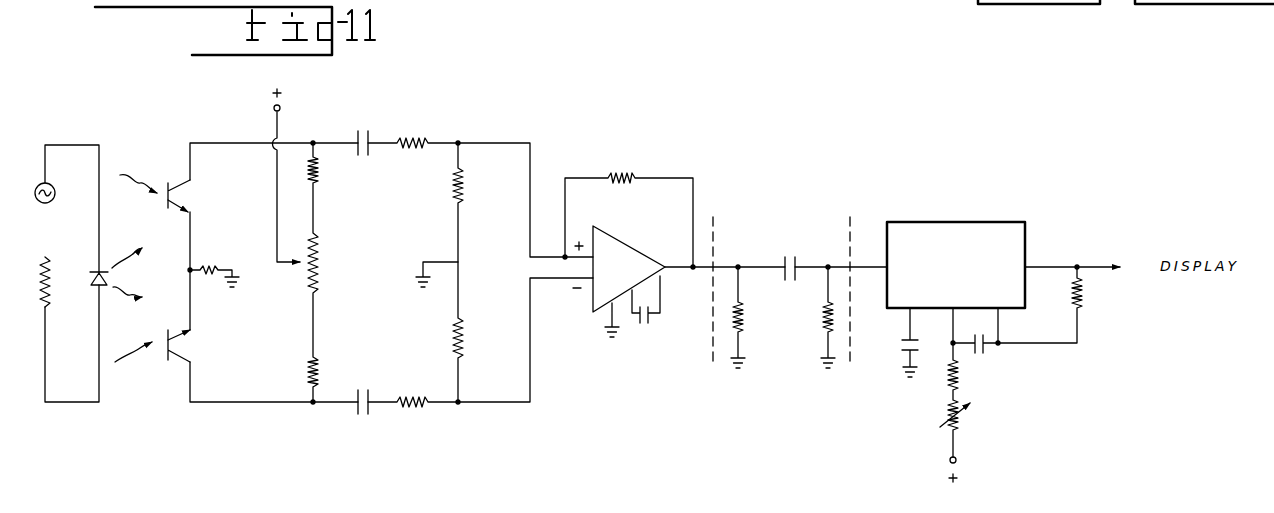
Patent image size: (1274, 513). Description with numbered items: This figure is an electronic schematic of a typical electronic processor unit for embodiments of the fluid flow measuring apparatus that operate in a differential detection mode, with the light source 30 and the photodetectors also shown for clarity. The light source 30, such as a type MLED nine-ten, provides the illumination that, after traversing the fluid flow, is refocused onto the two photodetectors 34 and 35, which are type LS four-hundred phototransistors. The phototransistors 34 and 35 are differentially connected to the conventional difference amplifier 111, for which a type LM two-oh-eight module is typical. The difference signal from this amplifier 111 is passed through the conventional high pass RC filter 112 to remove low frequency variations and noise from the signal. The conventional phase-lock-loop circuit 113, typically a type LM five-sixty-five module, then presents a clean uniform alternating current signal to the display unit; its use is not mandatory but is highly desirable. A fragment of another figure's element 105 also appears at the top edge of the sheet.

The light source 30 is at (97, 285).
The photodetector 34 is at (168, 207).
The photodetector 35 is at (168, 357).
The housing 105 is at (985, 5).
The difference amplifier 111 is at (593, 302).
The high pass RC filter 112 is at (802, 231).
The phase-lock-loop circuit 113 is at (967, 222).